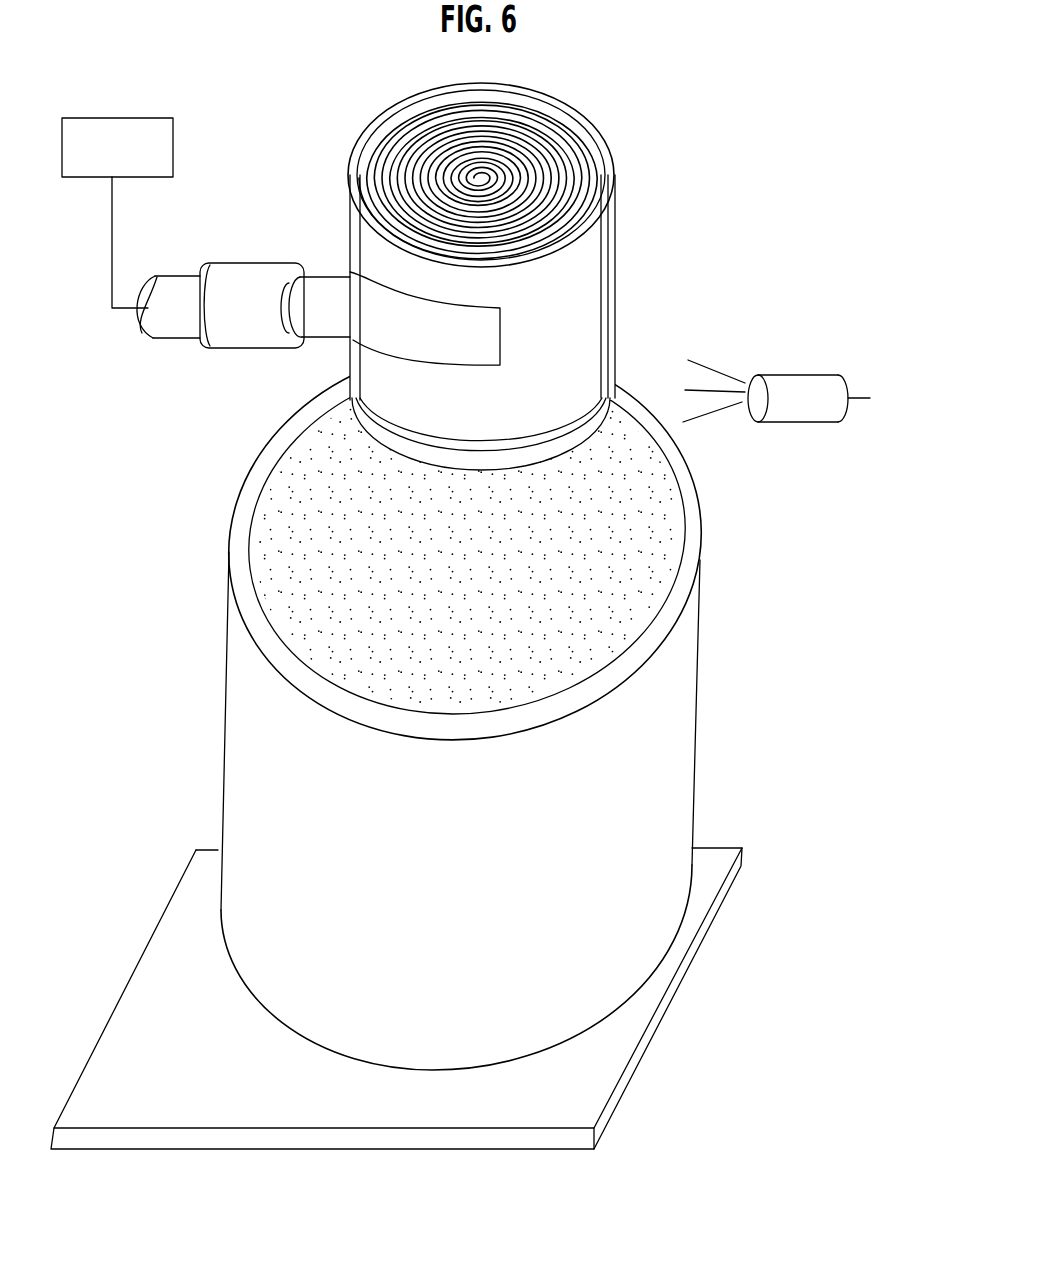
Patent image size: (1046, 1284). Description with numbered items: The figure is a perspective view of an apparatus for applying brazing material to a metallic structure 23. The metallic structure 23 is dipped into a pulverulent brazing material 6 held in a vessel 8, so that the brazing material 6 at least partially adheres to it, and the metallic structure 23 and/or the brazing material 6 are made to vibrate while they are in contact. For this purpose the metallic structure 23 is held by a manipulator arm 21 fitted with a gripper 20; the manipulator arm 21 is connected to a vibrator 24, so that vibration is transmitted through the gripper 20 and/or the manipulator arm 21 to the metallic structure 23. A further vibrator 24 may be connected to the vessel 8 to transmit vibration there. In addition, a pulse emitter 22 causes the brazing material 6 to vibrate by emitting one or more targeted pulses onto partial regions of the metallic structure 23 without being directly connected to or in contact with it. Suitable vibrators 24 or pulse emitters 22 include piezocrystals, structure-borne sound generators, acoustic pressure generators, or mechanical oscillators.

The pulverulent brazing material 6 is at (650, 538).
The vessel 8 is at (672, 827).
The gripper 20 is at (320, 322).
The manipulator arm 21 is at (175, 325).
The pulse emitter 22 is at (806, 393).
The metallic structure 23 is at (580, 287).
The vibrator 24 is at (136, 133).